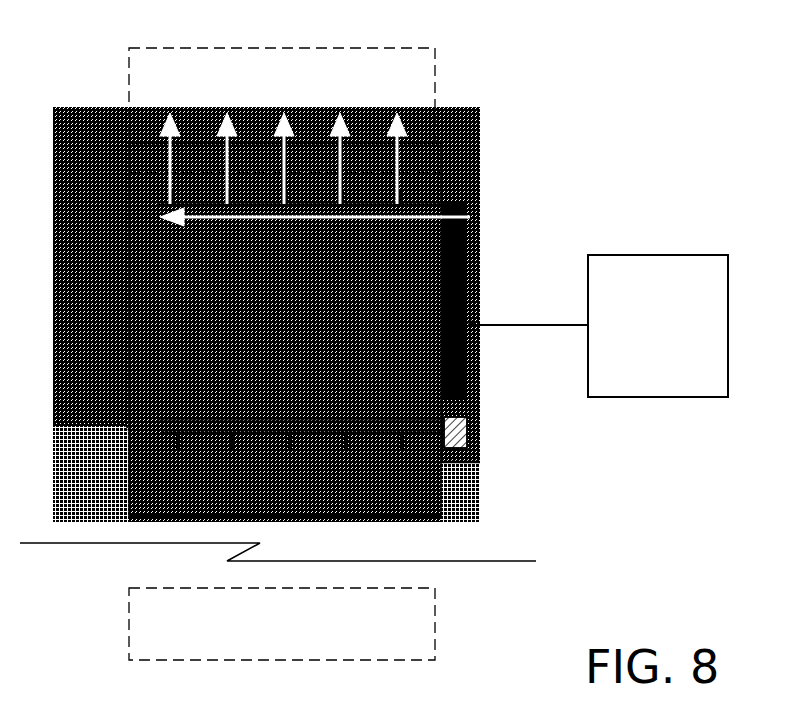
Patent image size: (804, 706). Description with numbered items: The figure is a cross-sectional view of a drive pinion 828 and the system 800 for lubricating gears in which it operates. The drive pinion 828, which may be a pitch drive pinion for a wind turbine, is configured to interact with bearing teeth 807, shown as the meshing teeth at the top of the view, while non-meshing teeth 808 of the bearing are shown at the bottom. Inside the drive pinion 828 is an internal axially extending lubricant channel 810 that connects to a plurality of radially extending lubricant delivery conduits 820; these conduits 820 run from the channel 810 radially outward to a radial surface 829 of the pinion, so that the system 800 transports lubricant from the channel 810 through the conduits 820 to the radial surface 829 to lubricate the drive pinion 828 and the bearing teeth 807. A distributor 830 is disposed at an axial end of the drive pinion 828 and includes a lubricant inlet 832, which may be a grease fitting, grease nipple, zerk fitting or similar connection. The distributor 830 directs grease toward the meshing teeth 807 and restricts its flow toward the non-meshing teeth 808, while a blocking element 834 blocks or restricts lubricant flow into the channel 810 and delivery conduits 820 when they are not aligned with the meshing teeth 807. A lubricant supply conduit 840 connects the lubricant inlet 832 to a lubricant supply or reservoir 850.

The system 800 is at (520, 48).
The bearing teeth 807 is at (302, 79).
The non-meshing teeth 808 is at (300, 632).
The internal axially extending lubricant channel 810 is at (364, 208).
The lubricant delivery conduits 820 is at (178, 204).
The drive pinion 828 is at (236, 337).
The radial surface 829 is at (415, 186).
The distributor 830 is at (453, 355).
The lubricant inlet 832 is at (478, 318).
The blocking element 834 is at (468, 432).
The lubricant supply conduit 840 is at (526, 330).
The lubricant supply or reservoir 850 is at (677, 336).